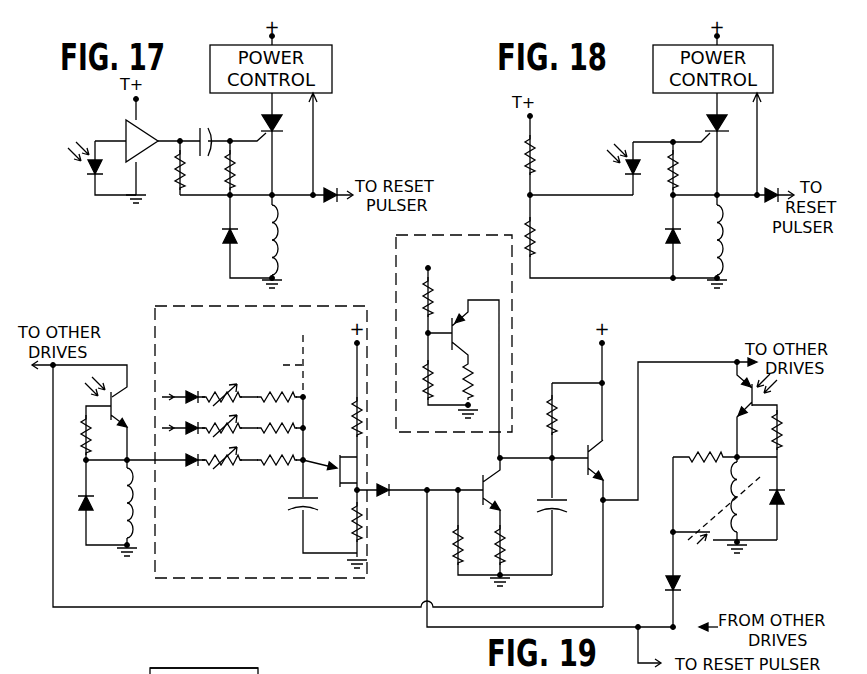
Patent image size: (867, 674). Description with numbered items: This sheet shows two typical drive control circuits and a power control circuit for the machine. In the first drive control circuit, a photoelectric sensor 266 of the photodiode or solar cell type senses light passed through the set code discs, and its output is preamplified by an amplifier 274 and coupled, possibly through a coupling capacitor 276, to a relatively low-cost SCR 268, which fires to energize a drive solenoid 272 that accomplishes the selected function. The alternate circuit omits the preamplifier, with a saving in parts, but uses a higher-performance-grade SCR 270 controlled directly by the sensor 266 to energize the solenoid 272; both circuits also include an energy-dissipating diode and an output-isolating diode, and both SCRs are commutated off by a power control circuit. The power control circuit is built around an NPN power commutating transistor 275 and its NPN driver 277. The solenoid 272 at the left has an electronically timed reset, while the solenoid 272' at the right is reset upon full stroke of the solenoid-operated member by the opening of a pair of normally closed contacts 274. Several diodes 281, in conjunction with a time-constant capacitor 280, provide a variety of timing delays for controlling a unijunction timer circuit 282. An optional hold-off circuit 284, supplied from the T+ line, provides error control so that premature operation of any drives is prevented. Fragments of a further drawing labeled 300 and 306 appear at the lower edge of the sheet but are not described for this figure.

In FIG. 17, the photoelectric sensor 266 is at (92, 178).
In FIG. 18, the photoelectric sensor 266 is at (628, 177).
In FIG. 17, the SCR 268 is at (262, 125).
In FIG. 18, the SCR 270 is at (708, 127).
In FIG. 17, the drive solenoid 272 is at (298, 242).
In FIG. 18, the drive solenoid 272 is at (749, 242).
In FIG. 19, the drive solenoid 272 is at (164, 502).
In FIG. 19, the drive solenoid 272' is at (710, 499).
In FIG. 17, the normally closed contacts 274 is at (144, 130).
In FIG. 19, the normally closed contacts 274 is at (673, 530).
In FIG. 19, the power commutating transistor 275 is at (591, 456).
In FIG. 17, the coupling capacitor 276 is at (207, 159).
In FIG. 19, the driver 277 is at (482, 482).
In FIG. 19, the time-constant capacitor 280 is at (288, 506).
In FIG. 19, the diodes 281 is at (179, 388).
In FIG. 19, the unijunction timer circuit 282 is at (328, 313).
In FIG. 19, the hold-off circuit 284 is at (498, 292).
In FIG. 19, the partial element 300 is at (234, 663).
In FIG. 19, the partial element 306 is at (240, 668).